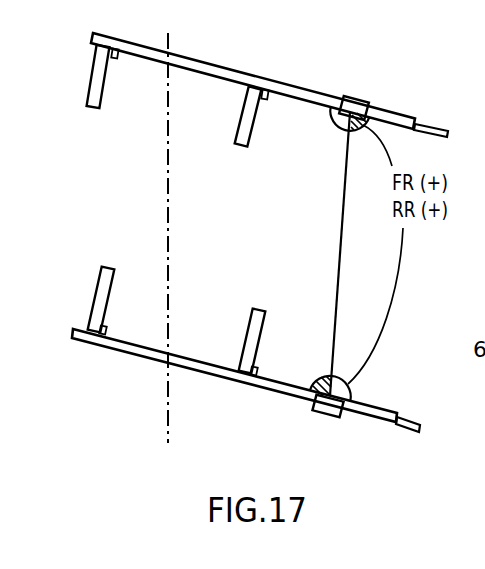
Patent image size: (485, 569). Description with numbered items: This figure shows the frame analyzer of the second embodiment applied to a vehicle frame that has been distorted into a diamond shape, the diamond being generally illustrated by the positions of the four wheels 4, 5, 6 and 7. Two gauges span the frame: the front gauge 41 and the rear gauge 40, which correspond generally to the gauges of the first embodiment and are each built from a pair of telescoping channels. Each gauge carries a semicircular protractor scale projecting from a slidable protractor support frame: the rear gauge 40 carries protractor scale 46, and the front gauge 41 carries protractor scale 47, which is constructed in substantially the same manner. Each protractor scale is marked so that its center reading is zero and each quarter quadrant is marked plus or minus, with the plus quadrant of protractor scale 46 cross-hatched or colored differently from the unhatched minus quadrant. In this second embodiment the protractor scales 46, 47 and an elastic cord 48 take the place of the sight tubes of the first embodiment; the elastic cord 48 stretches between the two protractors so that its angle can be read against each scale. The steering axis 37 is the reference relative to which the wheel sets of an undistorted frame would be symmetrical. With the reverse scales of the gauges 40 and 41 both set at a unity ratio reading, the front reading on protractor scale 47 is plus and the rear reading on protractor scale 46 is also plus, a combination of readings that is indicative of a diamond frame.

The wheel 4 is at (98, 72).
The wheel 5 is at (243, 118).
The wheel 6 is at (102, 283).
The wheel 7 is at (252, 327).
The steering axis 37 is at (168, 210).
The gauge 40 is at (220, 377).
The gauge 41 is at (303, 88).
The protractor scale 46 is at (320, 390).
The protractor scale 47 is at (330, 118).
The elastic cord 48 is at (338, 247).